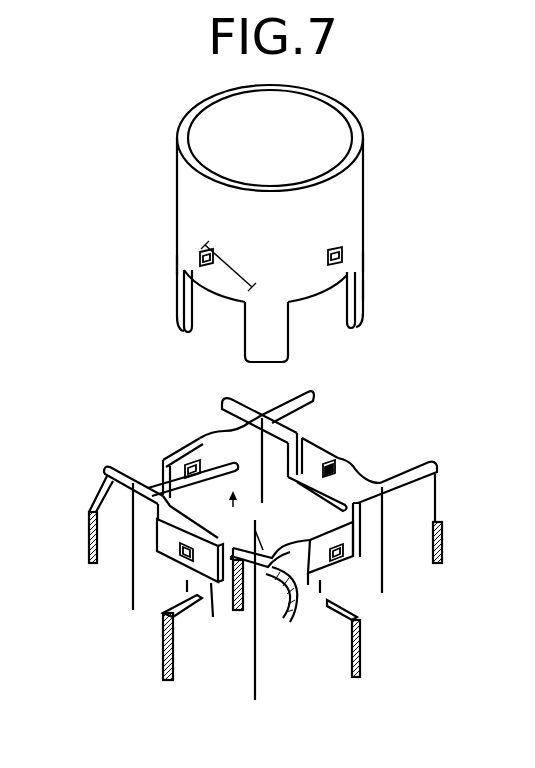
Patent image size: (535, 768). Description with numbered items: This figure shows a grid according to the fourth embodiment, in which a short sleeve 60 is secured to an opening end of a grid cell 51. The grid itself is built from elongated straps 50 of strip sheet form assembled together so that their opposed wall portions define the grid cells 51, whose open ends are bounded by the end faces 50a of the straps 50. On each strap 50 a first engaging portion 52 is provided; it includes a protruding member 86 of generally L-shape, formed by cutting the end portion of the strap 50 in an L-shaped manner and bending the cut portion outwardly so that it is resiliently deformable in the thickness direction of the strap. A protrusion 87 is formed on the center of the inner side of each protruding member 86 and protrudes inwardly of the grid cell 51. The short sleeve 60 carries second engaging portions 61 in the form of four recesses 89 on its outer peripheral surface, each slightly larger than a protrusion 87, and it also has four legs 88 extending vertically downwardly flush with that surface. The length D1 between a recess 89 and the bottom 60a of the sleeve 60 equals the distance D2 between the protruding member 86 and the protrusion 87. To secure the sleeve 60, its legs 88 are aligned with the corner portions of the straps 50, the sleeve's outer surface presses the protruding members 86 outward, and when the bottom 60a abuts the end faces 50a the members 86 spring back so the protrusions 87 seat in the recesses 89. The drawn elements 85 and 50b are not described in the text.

The short sleeve 60 is at (370, 192).
The bottom of the sleeve 60a is at (363, 290).
The second engaging portion 61 is at (172, 262).
The leg 88 is at (176, 314).
The recess 89 is at (199, 257).
The length between recess and sleeve bottom D1 is at (228, 270).
The strap 50 is at (160, 594).
The end face of the strap 50a is at (115, 466).
The contact terminal leg 50b is at (184, 582).
The grid cell 51 is at (270, 618).
The first engaging portion 52 is at (178, 452).
The lower contact plate 85 is at (162, 567).
The protruding member 86 is at (163, 477).
The protrusion 87 is at (187, 462).
The distance between protruding member and protrusion D2 is at (248, 520).